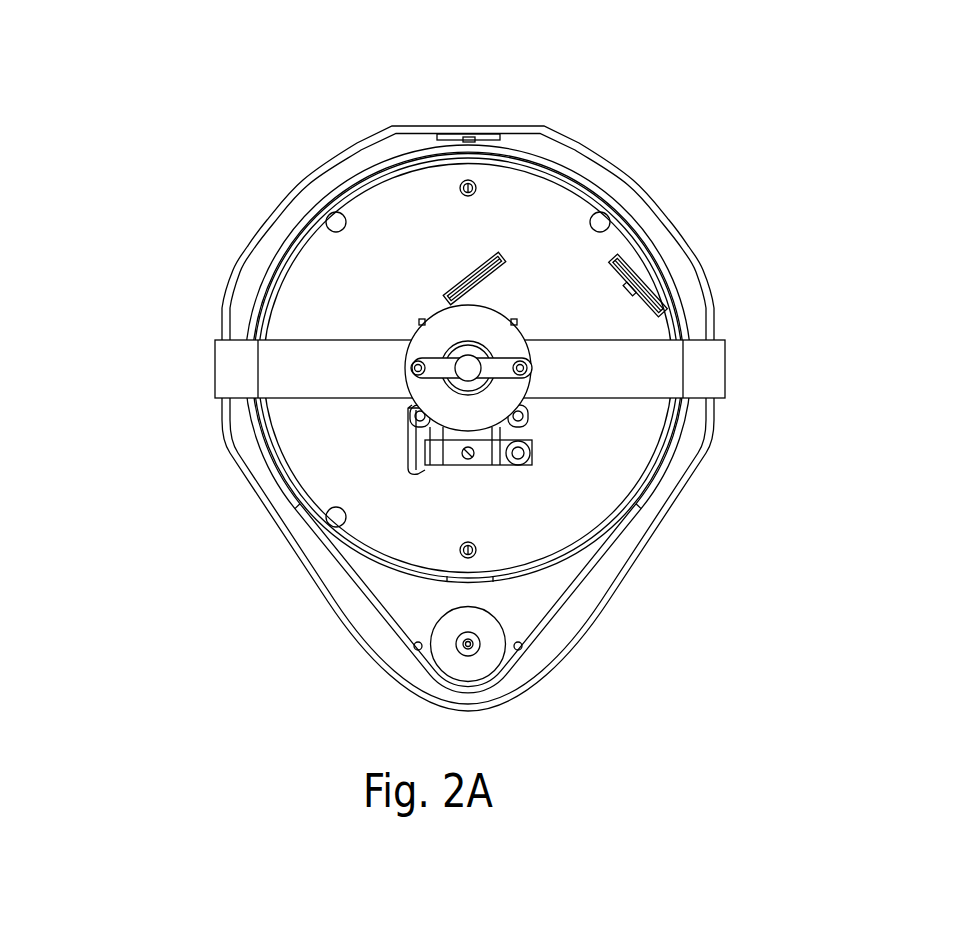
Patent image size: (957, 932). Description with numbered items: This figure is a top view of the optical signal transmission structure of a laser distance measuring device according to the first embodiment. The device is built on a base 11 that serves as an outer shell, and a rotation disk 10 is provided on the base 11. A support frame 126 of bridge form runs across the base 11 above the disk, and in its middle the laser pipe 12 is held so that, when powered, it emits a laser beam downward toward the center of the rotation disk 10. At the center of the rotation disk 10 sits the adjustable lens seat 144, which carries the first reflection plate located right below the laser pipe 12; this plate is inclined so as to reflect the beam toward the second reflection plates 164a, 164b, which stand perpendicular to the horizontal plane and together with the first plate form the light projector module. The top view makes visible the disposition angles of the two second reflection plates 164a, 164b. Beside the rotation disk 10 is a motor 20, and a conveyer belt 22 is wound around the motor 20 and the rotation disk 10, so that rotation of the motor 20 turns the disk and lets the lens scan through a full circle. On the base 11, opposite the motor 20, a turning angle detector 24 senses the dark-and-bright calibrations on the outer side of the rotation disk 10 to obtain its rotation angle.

The rotation disk 10 is at (610, 533).
The base 11 is at (315, 590).
The laser pipe 12 is at (466, 368).
The motor 20 is at (440, 660).
The conveyer belt 22 is at (278, 488).
The turning angle detector 24 is at (470, 133).
The support frame 126 is at (233, 352).
The adjustable lens seat 144 is at (414, 436).
The second reflection plate 164a is at (467, 275).
The second reflection plate 164b is at (620, 270).